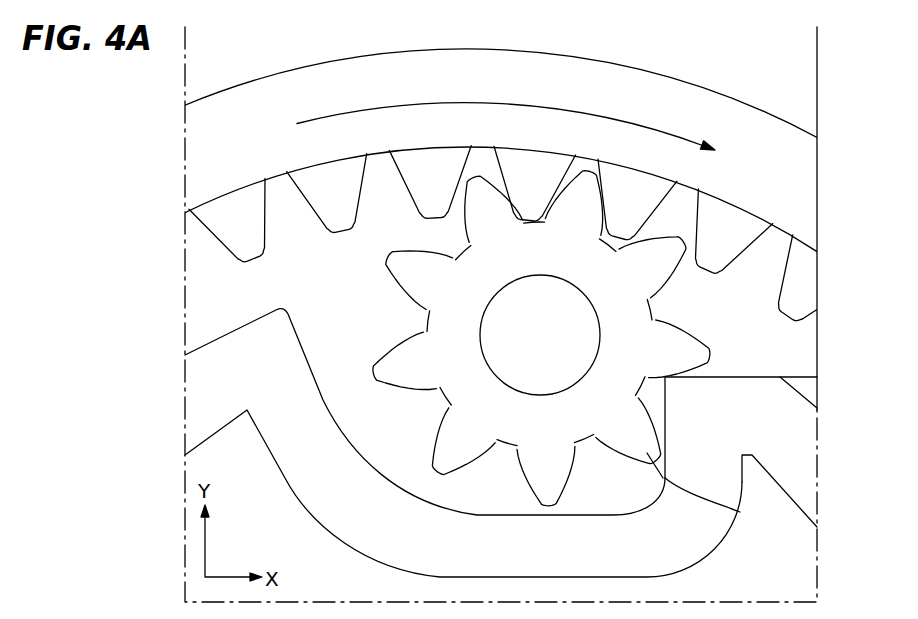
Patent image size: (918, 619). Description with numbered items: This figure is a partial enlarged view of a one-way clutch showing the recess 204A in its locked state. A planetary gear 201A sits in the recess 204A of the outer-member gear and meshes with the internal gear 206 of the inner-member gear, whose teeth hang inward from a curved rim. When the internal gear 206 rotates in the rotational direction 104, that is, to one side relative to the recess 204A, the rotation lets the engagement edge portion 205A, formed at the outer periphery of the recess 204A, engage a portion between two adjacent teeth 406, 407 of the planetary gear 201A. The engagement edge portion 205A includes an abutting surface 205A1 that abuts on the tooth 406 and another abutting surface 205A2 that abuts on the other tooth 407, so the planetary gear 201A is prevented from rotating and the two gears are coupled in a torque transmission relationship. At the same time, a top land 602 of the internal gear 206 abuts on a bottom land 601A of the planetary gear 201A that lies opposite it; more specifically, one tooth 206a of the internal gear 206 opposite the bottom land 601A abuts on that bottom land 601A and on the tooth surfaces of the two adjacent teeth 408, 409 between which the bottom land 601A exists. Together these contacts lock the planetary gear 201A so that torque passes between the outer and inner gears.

The rotational direction 104 is at (519, 116).
The internal gear 206 is at (484, 165).
The tooth of the internal gear 206a is at (523, 167).
The planetary gear 201A is at (534, 290).
The recess 204A is at (608, 516).
The engagement edge portion 205A is at (765, 445).
The abutting surface 205A1 is at (680, 378).
The abutting surface 205A2 is at (667, 445).
The tooth 406 is at (680, 345).
The tooth 407 is at (738, 512).
The tooth 408 is at (583, 203).
The tooth 409 is at (473, 193).
The bottom land 601A is at (527, 223).
The top land 602 is at (528, 218).